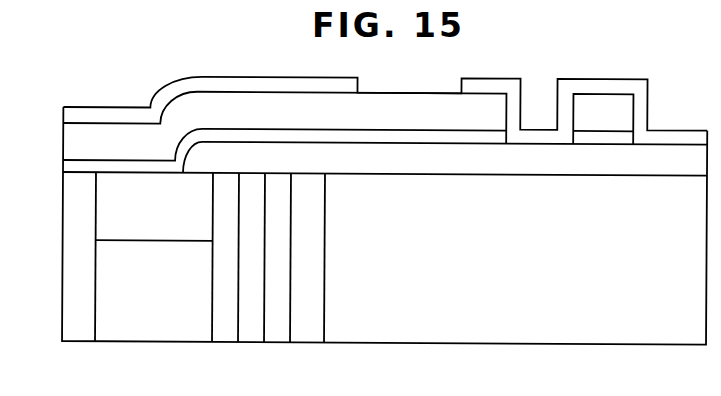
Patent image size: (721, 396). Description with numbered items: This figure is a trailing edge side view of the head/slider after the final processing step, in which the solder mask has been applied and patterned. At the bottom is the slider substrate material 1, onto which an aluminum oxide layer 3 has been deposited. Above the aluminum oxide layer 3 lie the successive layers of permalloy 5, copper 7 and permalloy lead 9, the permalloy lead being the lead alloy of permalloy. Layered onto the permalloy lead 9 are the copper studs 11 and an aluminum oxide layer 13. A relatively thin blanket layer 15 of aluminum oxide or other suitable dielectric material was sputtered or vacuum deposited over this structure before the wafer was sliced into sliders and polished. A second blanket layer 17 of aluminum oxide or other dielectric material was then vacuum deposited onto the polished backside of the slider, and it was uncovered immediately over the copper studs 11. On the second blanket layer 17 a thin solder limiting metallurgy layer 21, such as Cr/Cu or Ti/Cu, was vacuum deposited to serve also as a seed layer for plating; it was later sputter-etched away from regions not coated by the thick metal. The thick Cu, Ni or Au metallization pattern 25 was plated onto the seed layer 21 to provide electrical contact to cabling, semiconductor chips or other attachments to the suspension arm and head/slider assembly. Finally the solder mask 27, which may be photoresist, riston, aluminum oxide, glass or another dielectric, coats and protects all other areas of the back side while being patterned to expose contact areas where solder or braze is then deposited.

The slider substrate material 1 is at (512, 332).
The aluminum oxide layer 3 is at (308, 333).
The permalloy layer 5 is at (278, 333).
The copper layer 7 is at (252, 333).
The permalloy lead layer 9 is at (225, 333).
The copper studs 11 is at (110, 220).
The aluminum oxide layer 13 is at (155, 333).
The blanket layer 15 is at (75, 190).
The second blanket layer 17 is at (262, 153).
The solder limiting metallurgy layer 21 is at (420, 135).
The metallization pattern 25 is at (382, 102).
The solder mask 27 is at (203, 82).